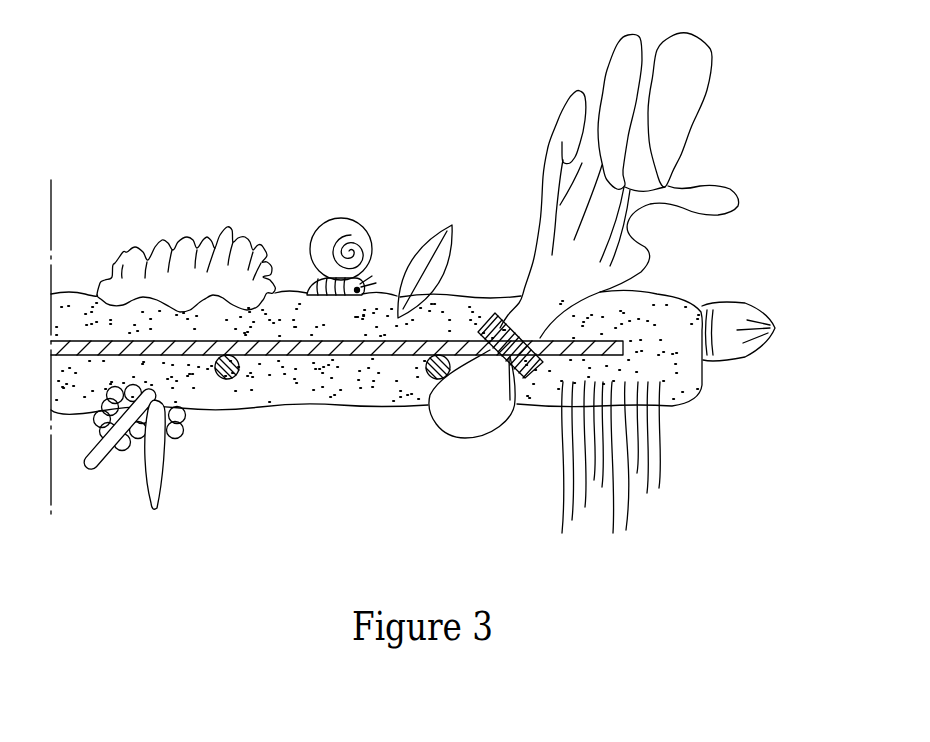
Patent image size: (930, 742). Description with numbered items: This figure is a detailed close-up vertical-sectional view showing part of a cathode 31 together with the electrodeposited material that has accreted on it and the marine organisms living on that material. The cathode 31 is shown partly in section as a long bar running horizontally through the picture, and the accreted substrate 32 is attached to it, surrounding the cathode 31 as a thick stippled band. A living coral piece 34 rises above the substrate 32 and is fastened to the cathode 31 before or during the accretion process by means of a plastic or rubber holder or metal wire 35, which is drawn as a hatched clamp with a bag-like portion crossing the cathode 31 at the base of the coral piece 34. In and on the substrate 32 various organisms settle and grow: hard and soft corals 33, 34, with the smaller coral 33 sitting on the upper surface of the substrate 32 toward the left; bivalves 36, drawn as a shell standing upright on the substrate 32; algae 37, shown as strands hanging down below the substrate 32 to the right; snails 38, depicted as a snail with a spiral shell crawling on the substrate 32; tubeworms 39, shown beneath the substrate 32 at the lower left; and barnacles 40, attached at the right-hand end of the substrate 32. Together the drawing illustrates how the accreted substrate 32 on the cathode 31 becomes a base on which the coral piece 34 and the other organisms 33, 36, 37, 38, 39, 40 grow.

The cathode 31 is at (240, 374).
The accreted substrate 32 is at (357, 383).
The hard and soft corals 33 is at (120, 270).
The living coral piece 34 is at (668, 134).
The holder or metal wire 35 is at (507, 417).
The bivalves 36 is at (415, 270).
The algae 37 is at (648, 450).
The snails 38 is at (323, 243).
The tubeworms 39 is at (158, 468).
The barnacles 40 is at (772, 327).